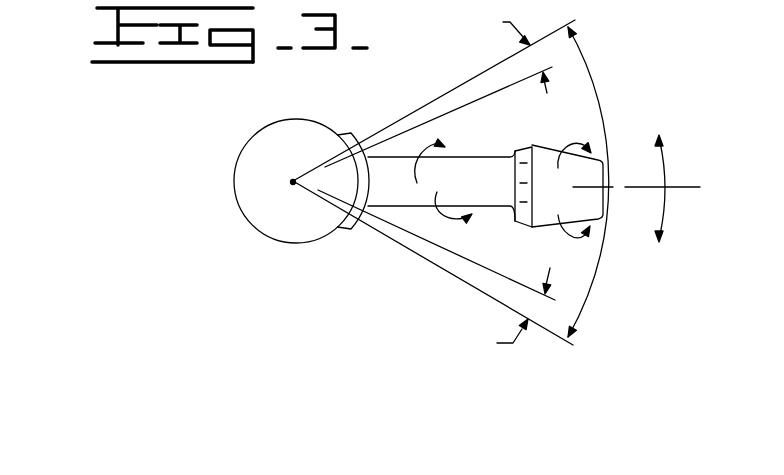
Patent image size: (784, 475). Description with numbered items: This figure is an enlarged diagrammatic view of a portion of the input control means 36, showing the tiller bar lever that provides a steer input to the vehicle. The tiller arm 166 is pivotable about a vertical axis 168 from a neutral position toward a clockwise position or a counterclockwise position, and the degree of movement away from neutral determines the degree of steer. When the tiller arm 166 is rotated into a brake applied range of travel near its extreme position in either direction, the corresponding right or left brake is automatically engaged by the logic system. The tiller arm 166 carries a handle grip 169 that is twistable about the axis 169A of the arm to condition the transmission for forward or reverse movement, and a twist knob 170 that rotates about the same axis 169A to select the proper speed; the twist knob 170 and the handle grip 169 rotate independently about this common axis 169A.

The input control means 36 is at (235, 106).
The vertical axis 168 is at (293, 182).
The handle grip 169 is at (468, 155).
The twist knob 170 is at (552, 143).
The tiller arm 166 is at (400, 276).
The axis of the tiller arm 169A is at (637, 188).